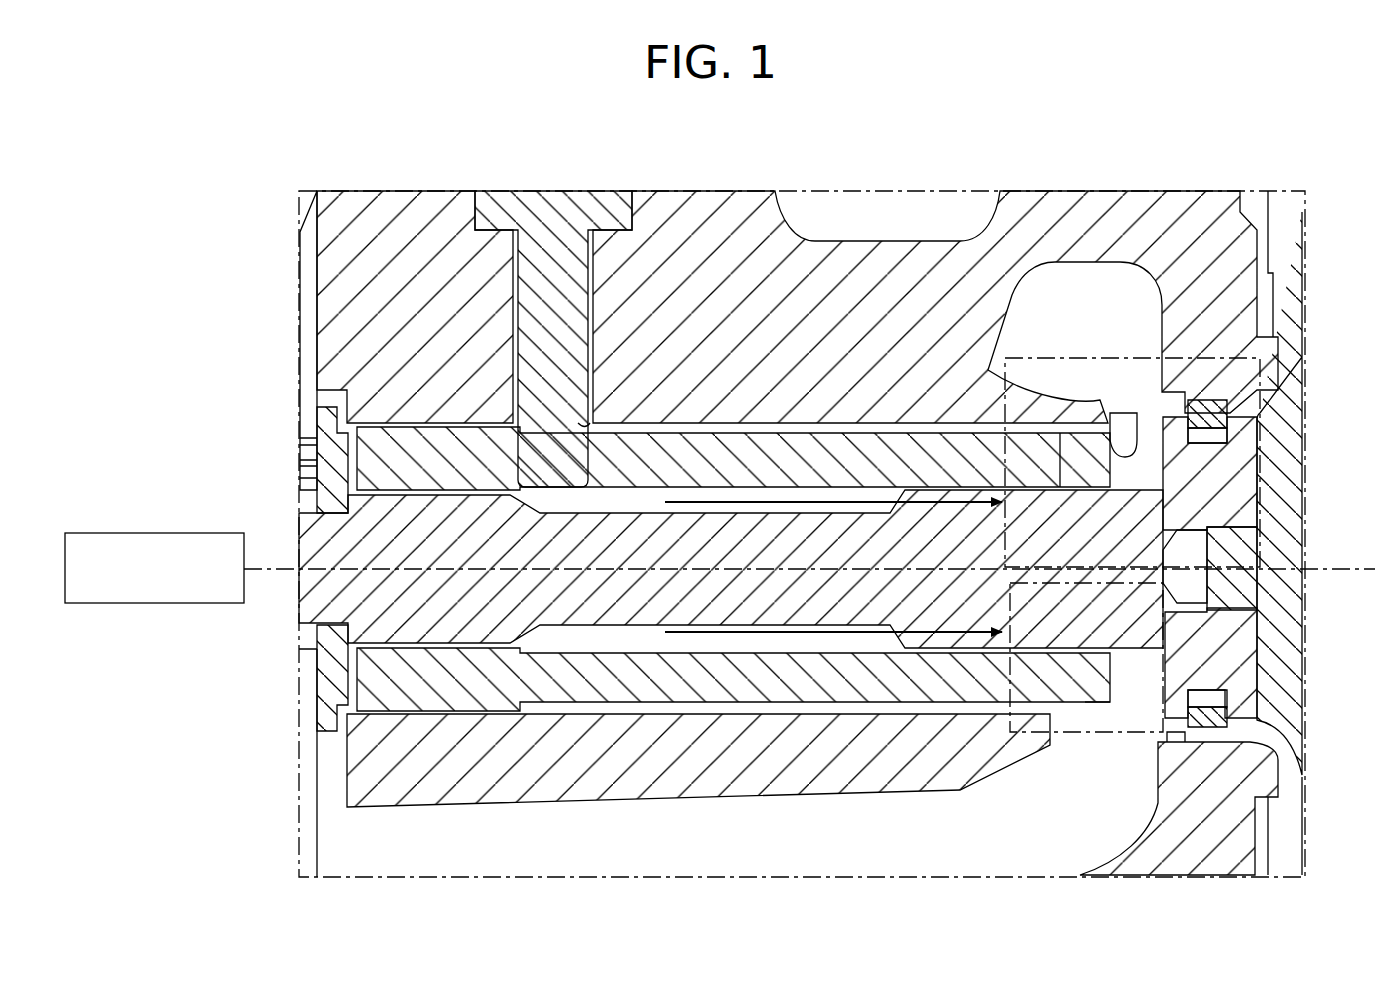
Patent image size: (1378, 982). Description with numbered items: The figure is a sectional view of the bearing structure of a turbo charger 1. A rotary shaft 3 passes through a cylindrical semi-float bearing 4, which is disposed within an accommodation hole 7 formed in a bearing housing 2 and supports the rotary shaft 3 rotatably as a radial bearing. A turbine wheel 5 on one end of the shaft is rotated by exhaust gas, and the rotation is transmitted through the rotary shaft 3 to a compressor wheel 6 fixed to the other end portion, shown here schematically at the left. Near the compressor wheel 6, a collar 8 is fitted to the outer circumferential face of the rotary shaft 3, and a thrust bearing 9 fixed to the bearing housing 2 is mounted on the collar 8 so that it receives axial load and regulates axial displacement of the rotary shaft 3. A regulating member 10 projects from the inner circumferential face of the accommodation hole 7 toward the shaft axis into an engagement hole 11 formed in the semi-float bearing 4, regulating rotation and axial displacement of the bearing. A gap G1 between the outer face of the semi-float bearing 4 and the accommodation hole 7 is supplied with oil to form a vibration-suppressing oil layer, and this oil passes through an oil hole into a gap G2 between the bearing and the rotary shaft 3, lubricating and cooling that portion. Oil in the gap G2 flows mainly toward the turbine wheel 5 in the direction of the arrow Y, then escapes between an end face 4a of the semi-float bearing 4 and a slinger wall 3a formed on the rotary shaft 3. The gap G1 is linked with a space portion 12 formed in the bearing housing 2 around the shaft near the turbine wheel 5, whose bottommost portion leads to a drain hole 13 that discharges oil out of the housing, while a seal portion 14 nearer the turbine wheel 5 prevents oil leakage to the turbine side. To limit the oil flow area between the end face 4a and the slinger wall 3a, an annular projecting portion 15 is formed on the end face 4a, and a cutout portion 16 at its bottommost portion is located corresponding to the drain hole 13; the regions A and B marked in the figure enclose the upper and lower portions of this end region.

The turbo charger 1 is at (367, 189).
The bearing housing 2 is at (786, 196).
The rotary shaft 3 is at (305, 608).
The slinger wall 3a is at (1118, 412).
The semi-float bearing 4 is at (378, 438).
The end face 4a is at (1085, 490).
The turbine wheel 5 is at (1300, 528).
The compressor wheel 6 is at (178, 604).
The accommodation hole 7 is at (545, 713).
The collar 8 is at (316, 496).
The thrust bearing 9 is at (300, 403).
The regulating member 10 is at (552, 192).
The engagement hole 11 is at (583, 428).
The space portion 12 is at (1043, 305).
The drain hole 13 is at (1150, 818).
The seal portion 14 is at (1206, 728).
The projecting portion 15 is at (1125, 443).
The cutout portion 16 is at (1100, 714).
The region A is at (1101, 357).
The region B is at (1076, 736).
The gap G1 is at (651, 426).
The gap G2 is at (650, 498).
The arrow Y is at (812, 500).